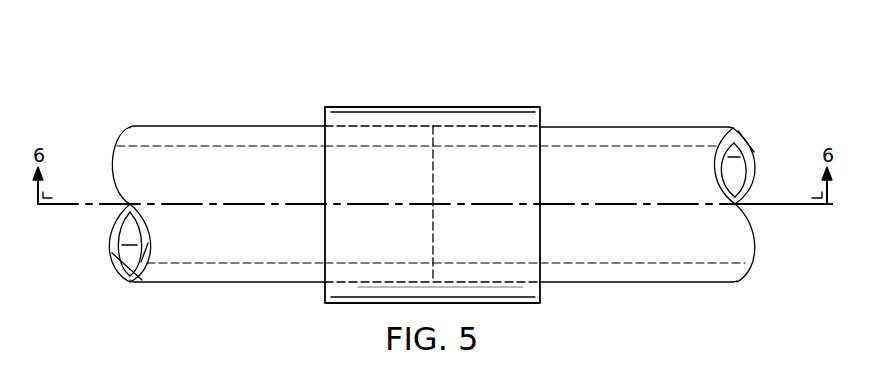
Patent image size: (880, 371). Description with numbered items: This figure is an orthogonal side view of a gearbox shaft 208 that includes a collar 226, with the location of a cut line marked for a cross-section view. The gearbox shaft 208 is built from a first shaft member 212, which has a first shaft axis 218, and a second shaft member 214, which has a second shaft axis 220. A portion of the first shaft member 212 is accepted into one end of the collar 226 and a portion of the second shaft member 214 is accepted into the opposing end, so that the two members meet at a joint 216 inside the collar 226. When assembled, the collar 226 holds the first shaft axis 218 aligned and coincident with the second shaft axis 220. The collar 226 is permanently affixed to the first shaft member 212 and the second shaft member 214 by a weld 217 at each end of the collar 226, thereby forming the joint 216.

The gearbox shaft 208 is at (294, 62).
The first shaft member 212 is at (178, 126).
The second shaft member 214 is at (686, 127).
The joint 216 is at (433, 232).
The weld 217 is at (542, 121).
The first shaft axis 218 is at (90, 202).
The second shaft axis 220 is at (775, 203).
The collar 226 is at (442, 104).